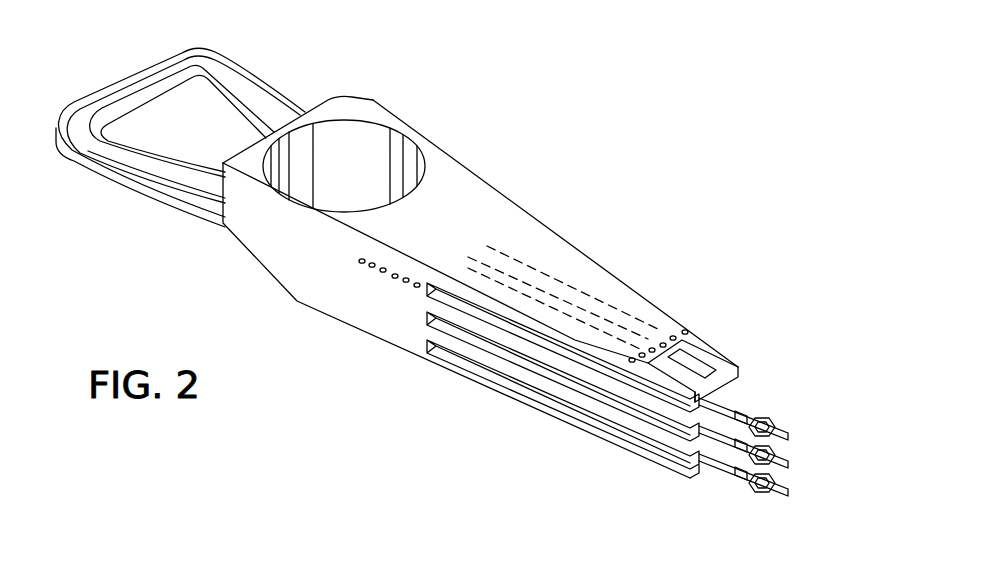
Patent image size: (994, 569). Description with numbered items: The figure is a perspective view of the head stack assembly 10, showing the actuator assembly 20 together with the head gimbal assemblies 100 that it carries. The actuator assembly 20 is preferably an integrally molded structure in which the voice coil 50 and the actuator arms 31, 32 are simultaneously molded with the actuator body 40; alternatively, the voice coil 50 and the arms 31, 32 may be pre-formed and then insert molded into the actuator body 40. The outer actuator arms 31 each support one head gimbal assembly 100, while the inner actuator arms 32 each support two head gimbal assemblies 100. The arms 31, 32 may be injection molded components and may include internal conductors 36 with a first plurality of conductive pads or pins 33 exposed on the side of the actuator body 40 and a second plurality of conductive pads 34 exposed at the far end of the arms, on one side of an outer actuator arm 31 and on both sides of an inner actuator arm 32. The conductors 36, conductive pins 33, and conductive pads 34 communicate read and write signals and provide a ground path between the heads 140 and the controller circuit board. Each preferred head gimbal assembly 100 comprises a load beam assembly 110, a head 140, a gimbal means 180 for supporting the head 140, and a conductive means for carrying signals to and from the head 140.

The head stack assembly 10 is at (566, 196).
The actuator assembly 20 is at (265, 260).
The outer actuator arm 31 is at (483, 180).
The inner actuator arm 32 is at (483, 358).
The conductive pins 33 is at (378, 272).
The conductive pads 34 is at (687, 331).
The internal conductors 36 is at (583, 288).
The actuator body 40 is at (404, 122).
The voice coil 50 is at (260, 78).
The head gimbal assembly 100 is at (767, 398).
The load beam assembly 110 is at (775, 413).
The head 140 is at (787, 432).
The gimbal means 180 is at (787, 493).